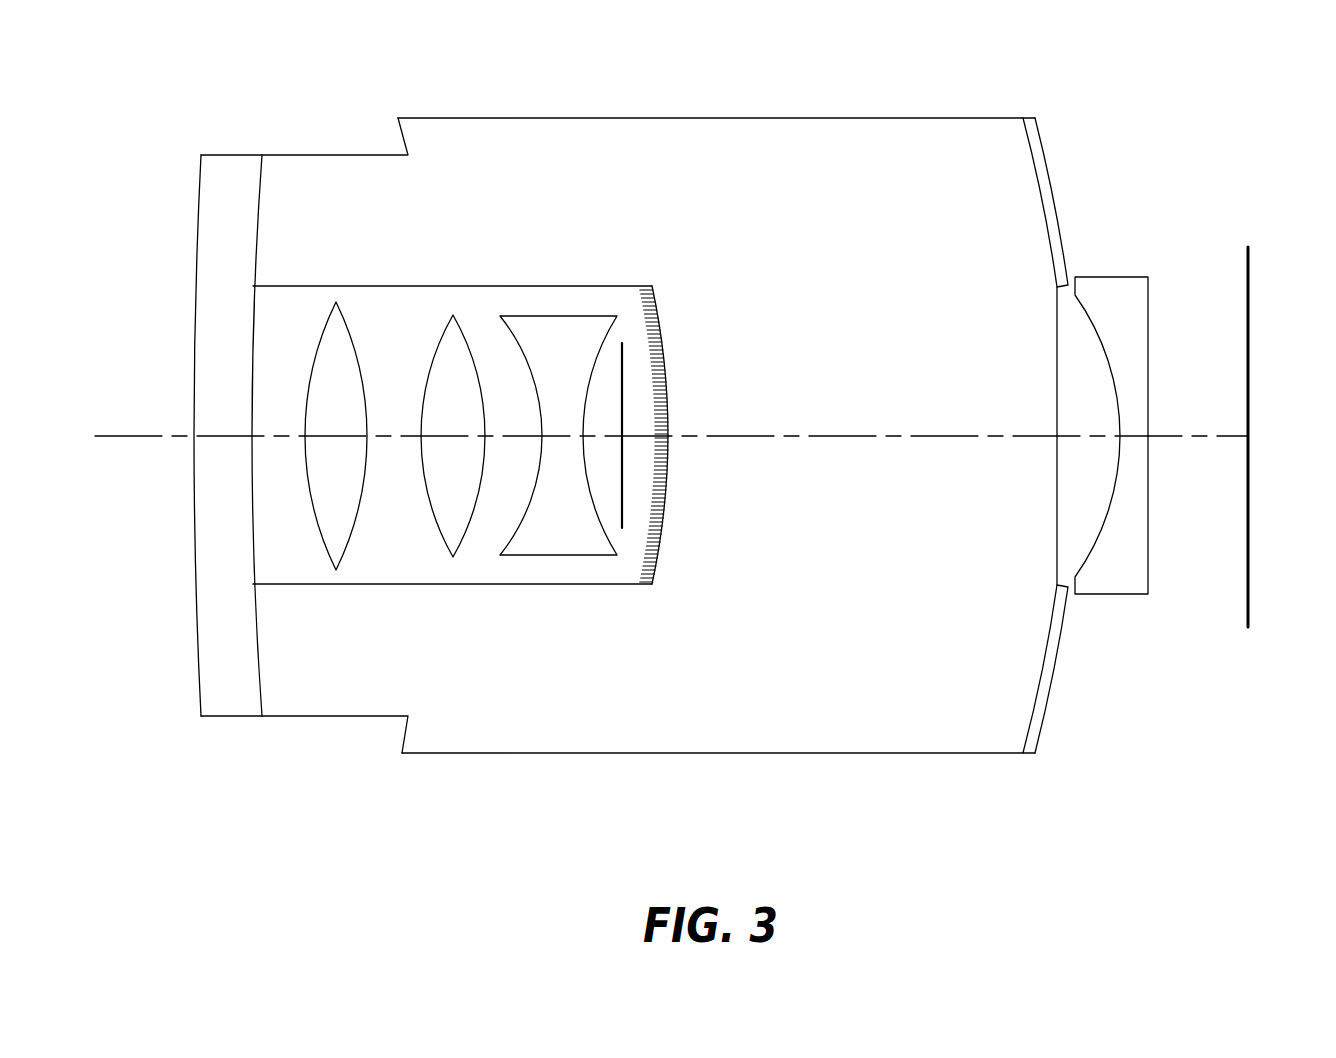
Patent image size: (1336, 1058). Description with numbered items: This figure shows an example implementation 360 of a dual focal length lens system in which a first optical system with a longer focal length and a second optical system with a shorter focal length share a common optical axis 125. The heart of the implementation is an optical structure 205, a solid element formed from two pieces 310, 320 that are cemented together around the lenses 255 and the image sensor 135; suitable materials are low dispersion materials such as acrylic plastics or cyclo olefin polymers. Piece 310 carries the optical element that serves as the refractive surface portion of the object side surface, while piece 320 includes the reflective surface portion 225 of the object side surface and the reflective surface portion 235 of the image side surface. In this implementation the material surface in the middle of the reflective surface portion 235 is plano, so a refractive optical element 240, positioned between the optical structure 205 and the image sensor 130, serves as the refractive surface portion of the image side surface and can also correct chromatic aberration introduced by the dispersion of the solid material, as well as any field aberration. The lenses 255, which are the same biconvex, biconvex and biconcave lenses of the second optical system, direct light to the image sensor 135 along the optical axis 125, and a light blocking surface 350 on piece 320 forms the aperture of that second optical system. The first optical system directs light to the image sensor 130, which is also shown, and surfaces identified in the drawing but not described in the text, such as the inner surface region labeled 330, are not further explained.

The example implementation 360 is at (193, 108).
The piece 310 is at (198, 222).
The front lens cap inner surface 330 is at (257, 225).
The light blocking surface 350 is at (404, 735).
The piece 320 is at (945, 116).
The optical structure 205 is at (945, 755).
The reflective surface portion 235 is at (1052, 241).
The optical axis 125 is at (143, 437).
The lenses 255 is at (320, 512).
The image sensor 135 is at (621, 500).
The reflective surface portion 225 is at (655, 562).
The refractive optical element 240 is at (1128, 285).
The image sensor 130 is at (1249, 608).